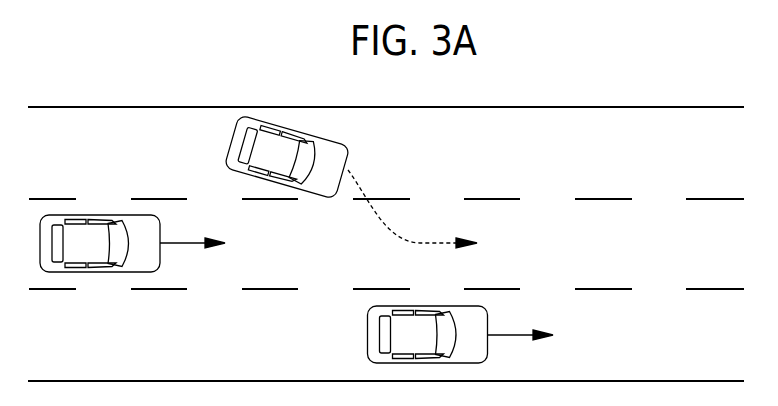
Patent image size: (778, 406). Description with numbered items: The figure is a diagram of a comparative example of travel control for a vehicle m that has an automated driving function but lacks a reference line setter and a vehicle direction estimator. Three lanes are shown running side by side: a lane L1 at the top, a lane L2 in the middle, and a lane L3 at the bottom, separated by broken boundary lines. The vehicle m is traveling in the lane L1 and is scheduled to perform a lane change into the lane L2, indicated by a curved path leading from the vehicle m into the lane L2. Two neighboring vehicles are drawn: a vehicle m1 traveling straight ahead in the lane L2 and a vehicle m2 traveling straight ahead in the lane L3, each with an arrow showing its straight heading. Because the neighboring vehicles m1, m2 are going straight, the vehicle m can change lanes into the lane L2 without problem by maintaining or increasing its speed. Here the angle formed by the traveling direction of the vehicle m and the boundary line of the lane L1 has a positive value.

The vehicle m is at (228, 140).
The vehicle m1 is at (98, 272).
The vehicle m2 is at (367, 331).
The lane L1 is at (742, 167).
The lane L2 is at (742, 258).
The lane L3 is at (742, 349).